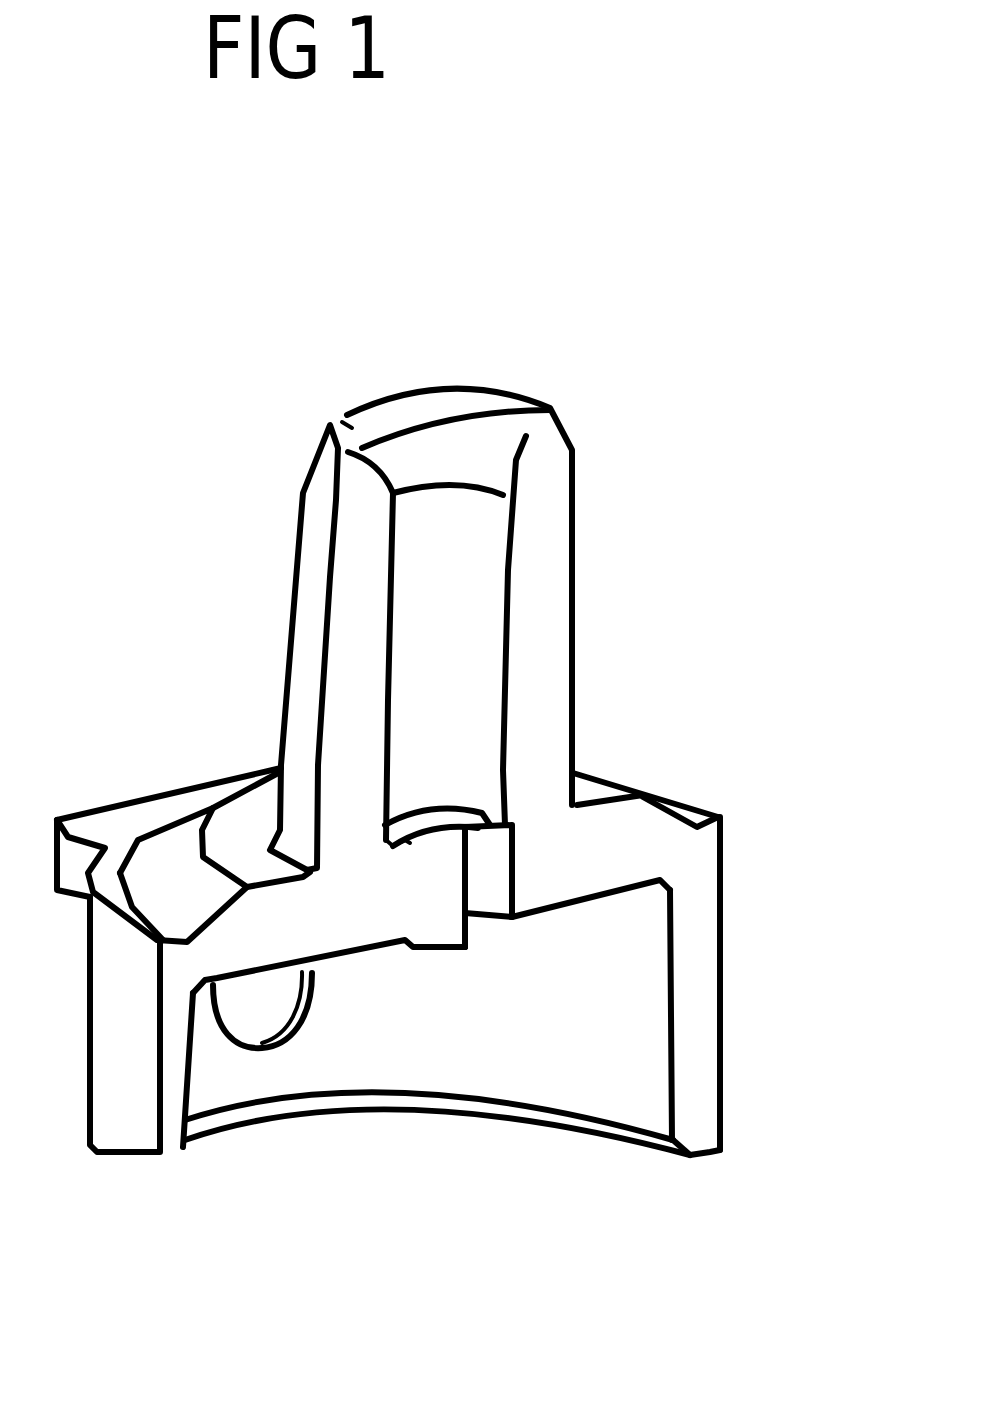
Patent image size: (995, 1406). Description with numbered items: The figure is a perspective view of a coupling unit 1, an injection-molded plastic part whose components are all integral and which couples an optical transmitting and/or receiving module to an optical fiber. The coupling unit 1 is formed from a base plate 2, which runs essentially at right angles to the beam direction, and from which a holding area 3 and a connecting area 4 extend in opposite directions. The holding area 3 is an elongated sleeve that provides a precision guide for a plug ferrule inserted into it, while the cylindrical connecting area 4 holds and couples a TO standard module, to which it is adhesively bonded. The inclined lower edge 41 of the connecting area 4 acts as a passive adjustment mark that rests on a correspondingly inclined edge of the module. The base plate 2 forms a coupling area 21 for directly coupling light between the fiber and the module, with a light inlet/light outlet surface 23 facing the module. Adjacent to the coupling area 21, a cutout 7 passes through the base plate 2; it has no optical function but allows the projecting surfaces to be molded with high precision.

The coupling unit 1 is at (636, 577).
The base plate 2 is at (627, 832).
The holding area 3 is at (543, 533).
The connecting area 4 is at (692, 998).
The cutout 7 is at (492, 892).
The coupling area 21 is at (420, 882).
The light inlet/light outlet surface 23 is at (447, 965).
The inclined lower edge 41 is at (255, 1018).